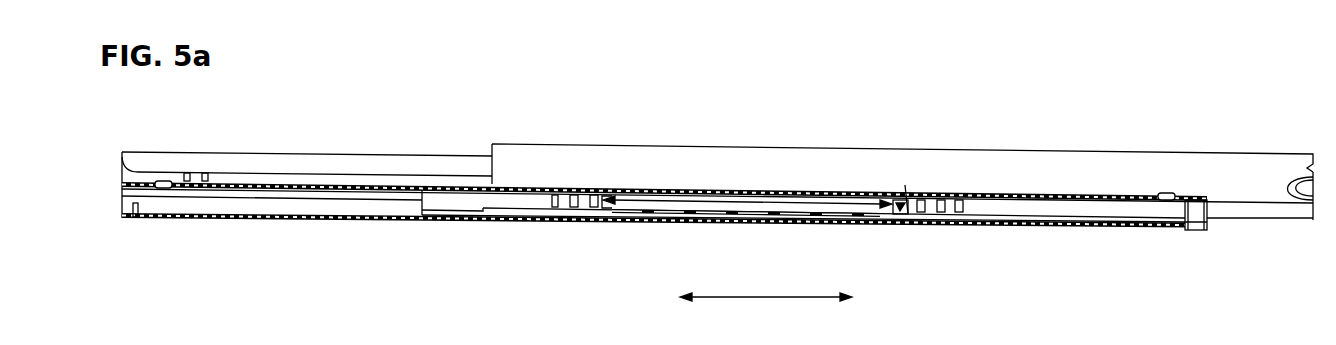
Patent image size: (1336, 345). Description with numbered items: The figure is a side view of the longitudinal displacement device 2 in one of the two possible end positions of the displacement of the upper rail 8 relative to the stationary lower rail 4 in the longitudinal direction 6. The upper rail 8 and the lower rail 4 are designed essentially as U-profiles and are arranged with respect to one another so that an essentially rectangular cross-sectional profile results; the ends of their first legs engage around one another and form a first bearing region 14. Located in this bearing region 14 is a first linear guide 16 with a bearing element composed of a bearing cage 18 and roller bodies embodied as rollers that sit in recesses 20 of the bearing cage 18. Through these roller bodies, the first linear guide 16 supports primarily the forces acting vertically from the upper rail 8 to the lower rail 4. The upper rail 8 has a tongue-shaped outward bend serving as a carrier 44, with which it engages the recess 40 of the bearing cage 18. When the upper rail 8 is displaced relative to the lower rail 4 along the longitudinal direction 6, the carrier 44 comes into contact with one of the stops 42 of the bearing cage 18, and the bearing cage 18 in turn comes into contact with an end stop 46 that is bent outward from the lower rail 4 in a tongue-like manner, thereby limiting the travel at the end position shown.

The longitudinal displacement device 2 is at (1088, 109).
The lower rail 4 is at (1013, 228).
The longitudinal direction 6 is at (764, 300).
The upper rail 8 is at (997, 165).
The first bearing region 14 is at (338, 198).
The first linear guide 16 is at (442, 219).
The bearing cage 18 is at (484, 200).
The recesses 20 is at (555, 207).
The recess of the bearing cage 40 is at (748, 215).
The stops 42 is at (612, 208).
The carrier 44 is at (905, 185).
The end stop 46 is at (134, 217).